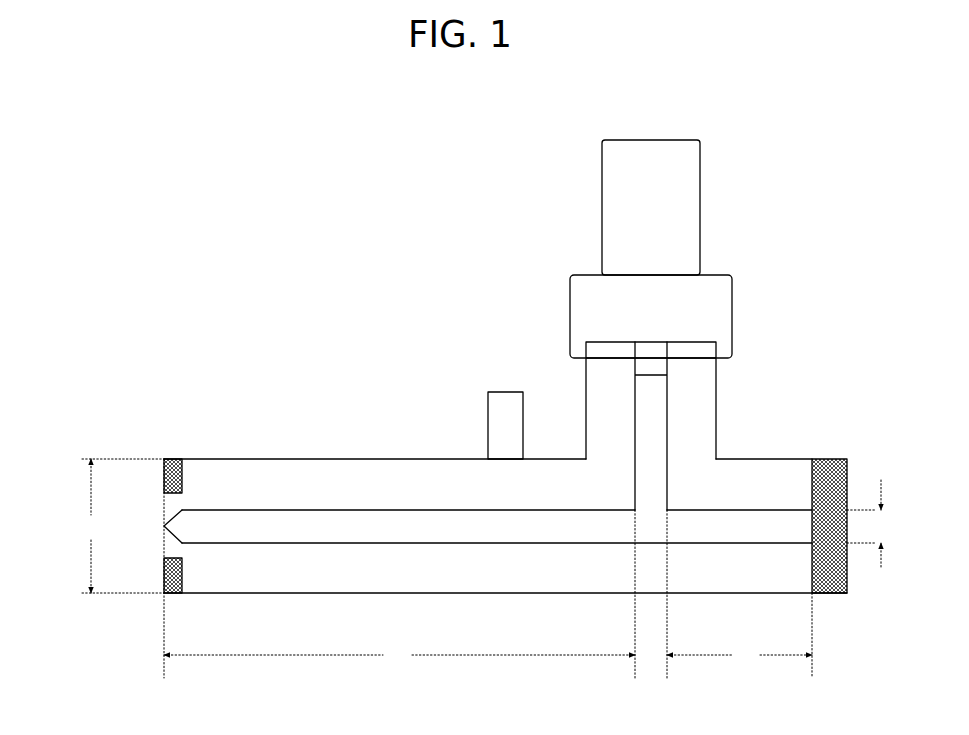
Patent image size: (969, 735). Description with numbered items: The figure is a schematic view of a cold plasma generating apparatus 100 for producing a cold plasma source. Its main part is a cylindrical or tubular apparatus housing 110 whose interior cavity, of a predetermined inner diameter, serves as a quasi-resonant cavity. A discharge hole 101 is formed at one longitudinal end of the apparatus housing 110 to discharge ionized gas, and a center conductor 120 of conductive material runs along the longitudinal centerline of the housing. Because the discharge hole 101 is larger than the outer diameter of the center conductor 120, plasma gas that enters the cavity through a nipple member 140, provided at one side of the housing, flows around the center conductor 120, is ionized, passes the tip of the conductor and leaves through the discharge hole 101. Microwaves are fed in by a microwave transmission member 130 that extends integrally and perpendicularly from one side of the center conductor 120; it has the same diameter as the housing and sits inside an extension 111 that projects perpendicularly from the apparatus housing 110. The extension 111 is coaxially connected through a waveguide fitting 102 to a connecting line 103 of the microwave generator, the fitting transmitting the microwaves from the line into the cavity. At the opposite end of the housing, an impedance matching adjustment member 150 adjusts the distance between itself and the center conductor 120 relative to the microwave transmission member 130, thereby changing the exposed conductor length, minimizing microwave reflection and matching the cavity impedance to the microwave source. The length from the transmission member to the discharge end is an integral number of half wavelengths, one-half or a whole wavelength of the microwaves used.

The cold plasma generating apparatus 100 is at (137, 228).
The discharge hole 101 is at (172, 503).
The waveguide fitting 102 is at (570, 322).
The connecting line 103 is at (601, 220).
The apparatus housing 110 is at (278, 458).
The extension 111 is at (586, 407).
The center conductor 120 is at (375, 507).
The microwave transmission member 130 is at (672, 432).
The nipple member 140 is at (488, 425).
The impedance matching adjustment member 150 is at (826, 458).